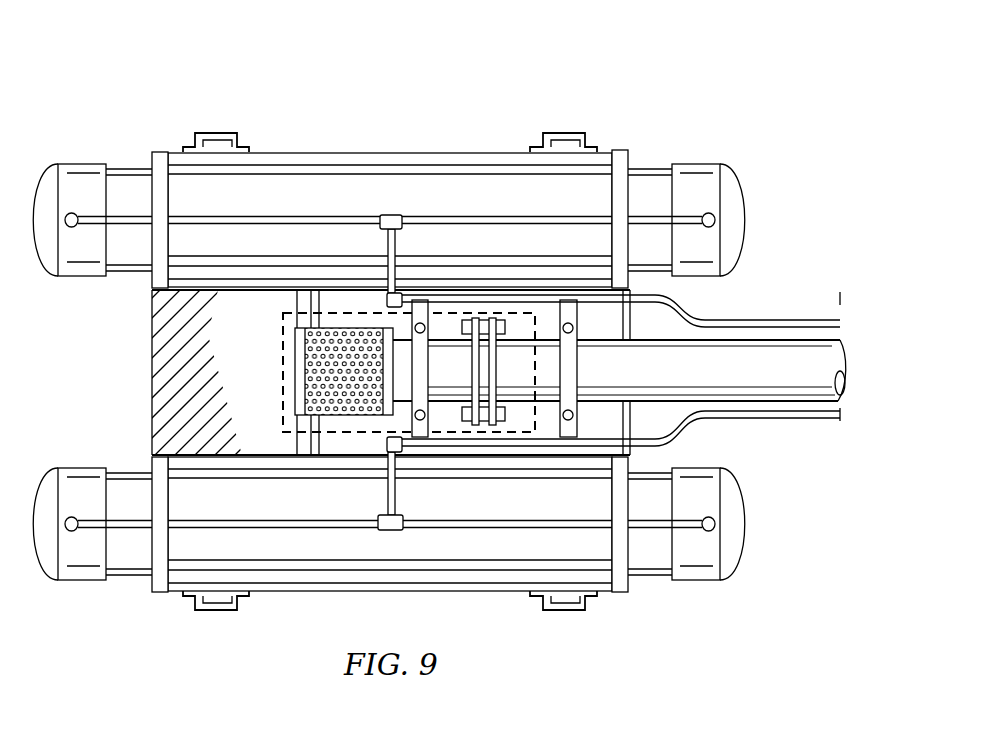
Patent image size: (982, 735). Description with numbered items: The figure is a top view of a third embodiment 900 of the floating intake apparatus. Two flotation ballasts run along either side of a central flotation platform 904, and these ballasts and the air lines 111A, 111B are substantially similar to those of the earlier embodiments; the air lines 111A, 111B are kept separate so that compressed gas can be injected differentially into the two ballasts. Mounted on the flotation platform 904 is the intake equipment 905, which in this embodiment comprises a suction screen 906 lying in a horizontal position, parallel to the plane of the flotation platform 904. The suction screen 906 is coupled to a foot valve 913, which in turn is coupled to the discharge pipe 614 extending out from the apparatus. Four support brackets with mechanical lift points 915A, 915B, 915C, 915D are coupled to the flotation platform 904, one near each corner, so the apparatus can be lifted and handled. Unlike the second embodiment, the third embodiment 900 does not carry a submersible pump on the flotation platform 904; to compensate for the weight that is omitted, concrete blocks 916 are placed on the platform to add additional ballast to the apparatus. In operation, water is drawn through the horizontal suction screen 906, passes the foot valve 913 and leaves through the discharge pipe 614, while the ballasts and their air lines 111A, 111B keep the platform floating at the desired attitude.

The third embodiment 900 is at (319, 60).
The flotation platform 904 is at (160, 150).
The intake equipment 905 is at (283, 355).
The suction screen 906 is at (355, 328).
The foot valve 913 is at (473, 318).
The support bracket with mechanical lift point 915A is at (562, 133).
The support bracket with mechanical lift point 915B is at (215, 133).
The support bracket with mechanical lift point 915C is at (566, 612).
The support bracket with mechanical lift point 915D is at (215, 612).
The concrete blocks 916 is at (173, 378).
The air line 111A is at (806, 320).
The air line 111B is at (806, 418).
The discharge pipe 614 is at (744, 401).